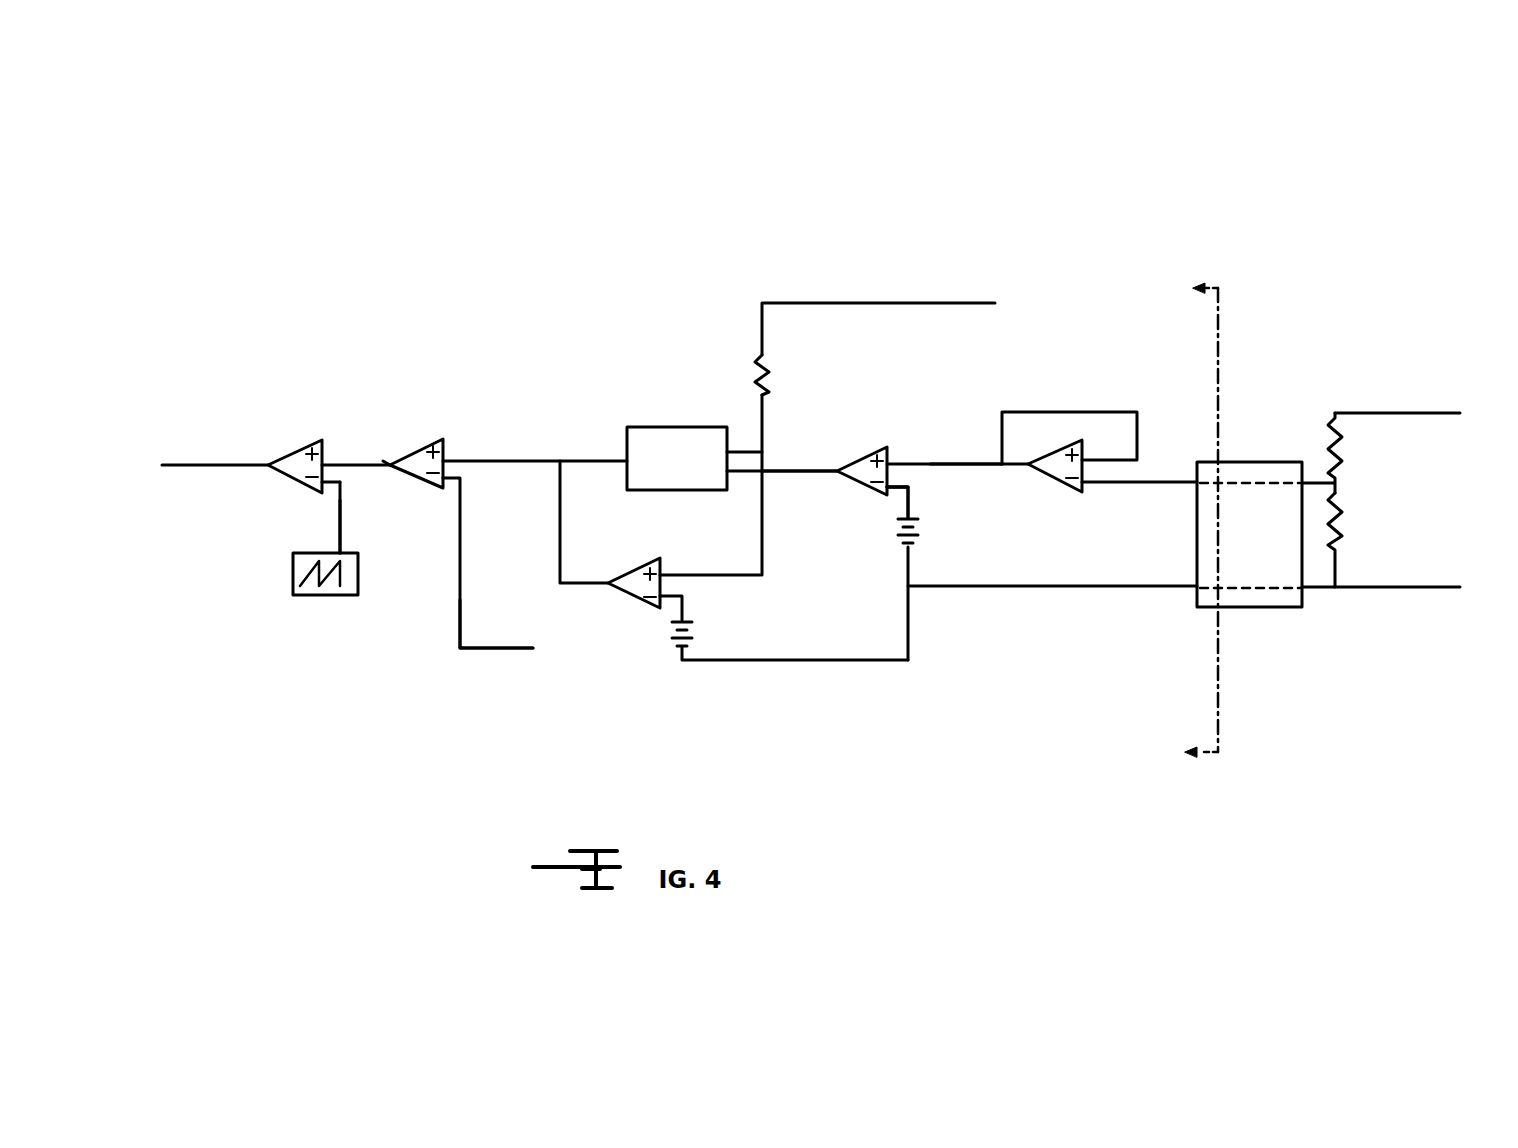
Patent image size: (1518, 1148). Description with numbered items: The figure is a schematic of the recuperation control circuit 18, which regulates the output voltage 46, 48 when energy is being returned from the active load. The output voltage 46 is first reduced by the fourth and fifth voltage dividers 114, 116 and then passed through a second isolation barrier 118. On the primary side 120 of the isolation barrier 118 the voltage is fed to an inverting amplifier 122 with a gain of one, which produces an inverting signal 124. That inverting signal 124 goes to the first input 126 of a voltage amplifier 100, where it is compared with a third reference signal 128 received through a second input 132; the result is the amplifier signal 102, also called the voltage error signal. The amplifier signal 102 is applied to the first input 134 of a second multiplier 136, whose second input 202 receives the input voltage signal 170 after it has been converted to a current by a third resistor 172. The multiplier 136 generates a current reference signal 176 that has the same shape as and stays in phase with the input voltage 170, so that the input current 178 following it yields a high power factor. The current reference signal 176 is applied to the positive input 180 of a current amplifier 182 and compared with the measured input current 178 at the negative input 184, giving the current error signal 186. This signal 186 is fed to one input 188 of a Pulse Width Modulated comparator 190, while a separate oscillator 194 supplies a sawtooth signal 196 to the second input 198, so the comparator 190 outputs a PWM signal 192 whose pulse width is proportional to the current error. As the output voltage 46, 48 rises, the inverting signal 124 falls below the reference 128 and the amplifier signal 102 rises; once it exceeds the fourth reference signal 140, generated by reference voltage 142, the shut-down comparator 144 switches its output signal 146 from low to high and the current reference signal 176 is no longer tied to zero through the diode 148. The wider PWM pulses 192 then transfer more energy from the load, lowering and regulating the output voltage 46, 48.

The recuperation control circuit 18 is at (1092, 228).
The output voltage 46 is at (1447, 415).
The output voltage 48 is at (1007, 588).
The voltage amplifier 100 is at (845, 465).
The amplifier signal 102 is at (790, 471).
The fourth voltage divider 114 is at (1338, 452).
The fifth voltage divider 116 is at (1335, 523).
The second isolation barrier 118 is at (1218, 462).
The primary side 120 is at (1172, 525).
The inverting amplifier 122 is at (1065, 445).
The inverting signal 124 is at (935, 463).
The first input 126 is at (890, 460).
The third reference signal 128 is at (892, 488).
The second input 132 is at (887, 498).
The first input 134 is at (733, 472).
The second multiplier 136 is at (668, 427).
The fourth reference signal 140 is at (675, 608).
The reference voltage 142 is at (690, 635).
The shut-down comparator 144 is at (667, 572).
The comparator output signal 146 is at (637, 572).
The diode 148 is at (558, 547).
The input voltage signal 170 is at (918, 306).
The third resistor 172 is at (770, 370).
The current reference signal 176 is at (545, 461).
The input current 178 is at (483, 650).
The positive input 180 is at (447, 438).
The current amplifier 182 is at (407, 450).
The negative input 184 is at (452, 490).
The current error signal 186 is at (355, 463).
The input 188 is at (320, 440).
The Pulse Width Modulated comparator 190 is at (280, 473).
The Pulse Width Modulated signal 192 is at (220, 463).
The oscillator 194 is at (333, 597).
The sawtooth signal 196 is at (335, 537).
The second input 198 is at (322, 497).
The second input 202 is at (737, 443).